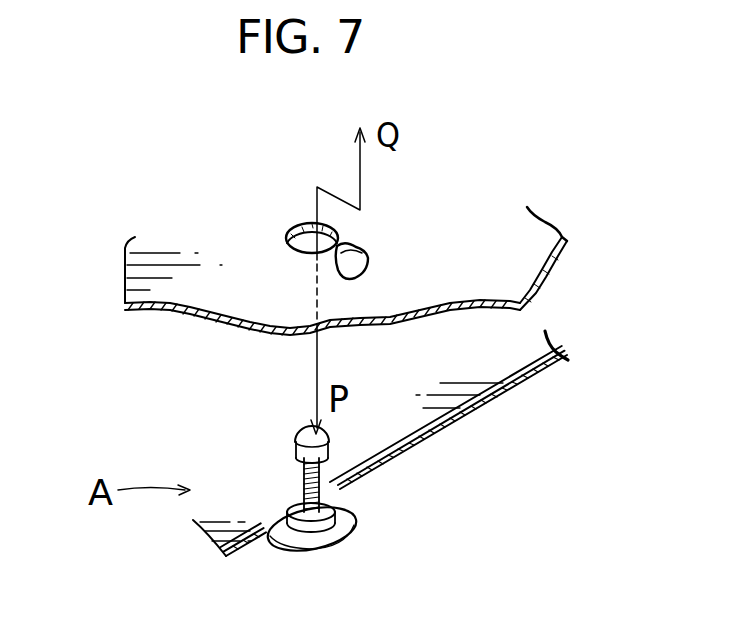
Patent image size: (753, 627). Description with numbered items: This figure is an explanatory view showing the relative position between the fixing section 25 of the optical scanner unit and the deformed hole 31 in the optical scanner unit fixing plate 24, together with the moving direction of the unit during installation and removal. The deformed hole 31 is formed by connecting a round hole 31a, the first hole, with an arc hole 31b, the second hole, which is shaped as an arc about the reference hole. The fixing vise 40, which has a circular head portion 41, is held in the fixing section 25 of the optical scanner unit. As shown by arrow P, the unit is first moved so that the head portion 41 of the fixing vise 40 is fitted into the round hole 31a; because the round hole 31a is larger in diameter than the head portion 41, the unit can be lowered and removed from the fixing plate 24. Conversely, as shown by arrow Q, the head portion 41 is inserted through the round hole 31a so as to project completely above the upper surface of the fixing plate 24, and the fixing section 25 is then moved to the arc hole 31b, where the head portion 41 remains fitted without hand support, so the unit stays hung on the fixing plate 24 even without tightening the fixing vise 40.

The optical scanner unit fixing plate 24 is at (173, 313).
The deformed hole 31 is at (324, 204).
The round hole 31a is at (300, 222).
The arc hole 31b is at (352, 257).
The fixing vise 40 is at (295, 442).
The head portion 41 is at (327, 446).
The fixing section 25 is at (292, 507).